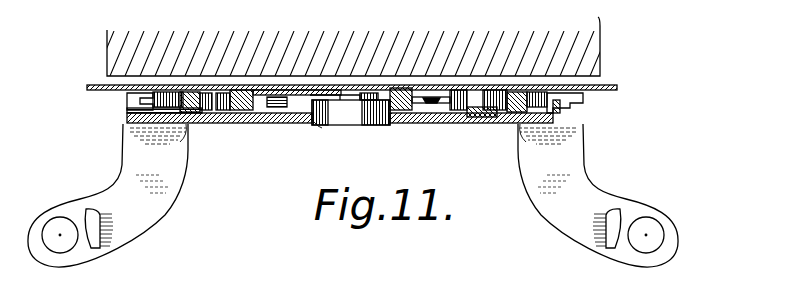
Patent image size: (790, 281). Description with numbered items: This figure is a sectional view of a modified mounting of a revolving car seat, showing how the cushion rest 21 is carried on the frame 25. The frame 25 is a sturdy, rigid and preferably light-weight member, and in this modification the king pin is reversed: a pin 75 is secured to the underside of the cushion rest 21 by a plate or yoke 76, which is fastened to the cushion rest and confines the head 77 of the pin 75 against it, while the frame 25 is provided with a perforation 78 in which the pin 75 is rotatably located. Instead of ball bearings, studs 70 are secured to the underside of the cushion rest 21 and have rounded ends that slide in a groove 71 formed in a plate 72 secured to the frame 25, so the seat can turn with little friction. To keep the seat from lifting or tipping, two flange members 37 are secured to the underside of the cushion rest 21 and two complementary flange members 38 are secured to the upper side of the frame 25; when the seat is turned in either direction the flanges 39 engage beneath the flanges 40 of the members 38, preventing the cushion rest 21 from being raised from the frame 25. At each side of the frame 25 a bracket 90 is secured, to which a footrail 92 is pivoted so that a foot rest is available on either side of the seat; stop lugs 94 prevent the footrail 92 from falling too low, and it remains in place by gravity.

The cushion rest 21 is at (610, 85).
The frame 25 is at (292, 123).
The flange member 37 is at (184, 141).
The complementary flange member 38 is at (125, 118).
The flange 39 is at (346, 156).
The flange 40 is at (141, 97).
The stud 70 is at (232, 93).
The groove 71 is at (203, 116).
The plate 72 is at (458, 110).
The pin 75 is at (346, 112).
The plate or yoke 76 is at (402, 96).
The head 77 is at (378, 92).
The perforation 78 is at (320, 130).
The bracket 90 is at (157, 201).
The footrail 92 is at (580, 180).
The stop lug 94 is at (102, 237).